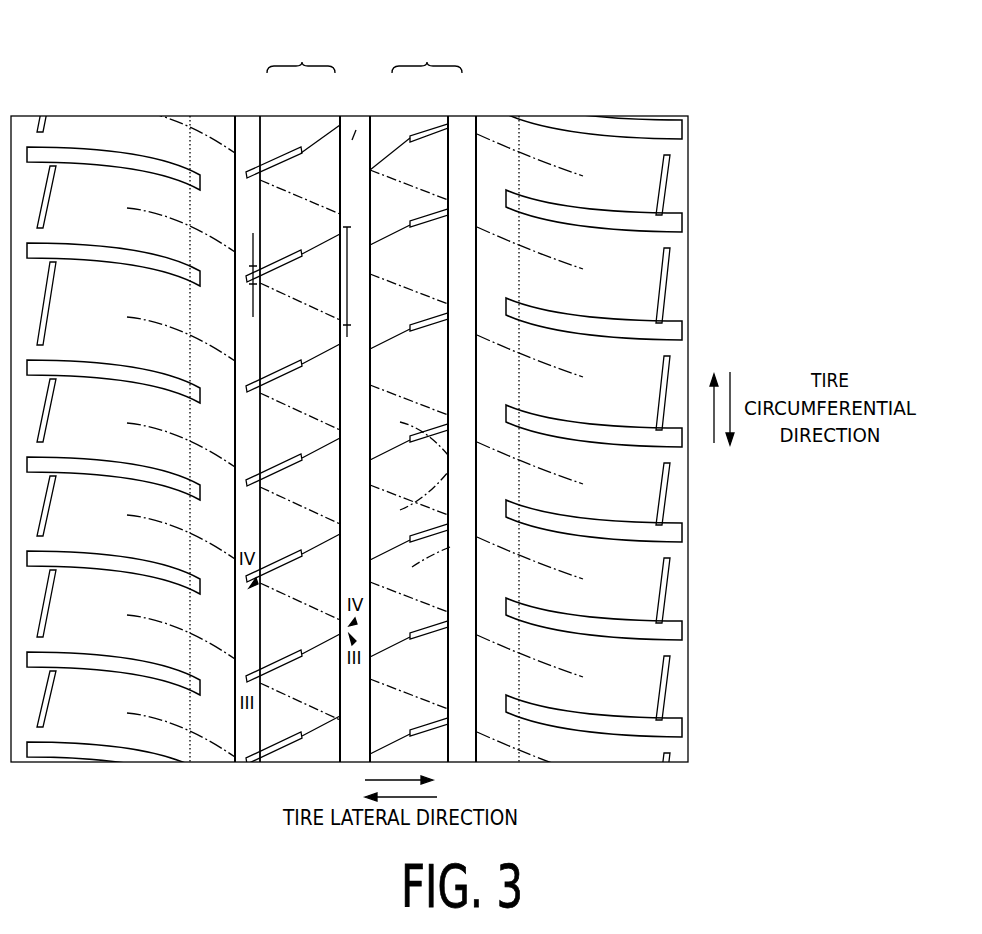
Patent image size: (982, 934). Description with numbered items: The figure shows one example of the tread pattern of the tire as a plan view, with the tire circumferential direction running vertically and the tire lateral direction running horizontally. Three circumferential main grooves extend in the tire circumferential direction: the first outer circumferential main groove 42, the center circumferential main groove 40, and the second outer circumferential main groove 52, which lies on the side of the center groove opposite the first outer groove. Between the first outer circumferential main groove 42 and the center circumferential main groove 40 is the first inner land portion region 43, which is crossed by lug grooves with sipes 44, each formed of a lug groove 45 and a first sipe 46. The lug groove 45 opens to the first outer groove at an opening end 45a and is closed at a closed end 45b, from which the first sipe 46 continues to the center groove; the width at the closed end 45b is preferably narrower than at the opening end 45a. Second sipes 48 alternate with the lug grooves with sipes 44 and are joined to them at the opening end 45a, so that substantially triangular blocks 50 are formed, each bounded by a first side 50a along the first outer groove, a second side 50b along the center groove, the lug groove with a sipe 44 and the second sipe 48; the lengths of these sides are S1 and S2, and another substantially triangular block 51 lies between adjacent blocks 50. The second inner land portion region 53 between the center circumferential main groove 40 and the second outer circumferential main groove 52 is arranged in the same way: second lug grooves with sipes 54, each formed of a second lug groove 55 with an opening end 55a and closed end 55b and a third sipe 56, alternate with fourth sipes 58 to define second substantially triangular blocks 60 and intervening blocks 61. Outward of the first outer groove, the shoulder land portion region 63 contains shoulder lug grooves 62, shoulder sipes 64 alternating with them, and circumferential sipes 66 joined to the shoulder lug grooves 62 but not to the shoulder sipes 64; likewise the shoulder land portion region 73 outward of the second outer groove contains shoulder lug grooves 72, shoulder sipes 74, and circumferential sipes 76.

The center circumferential main groove 40 is at (360, 140).
The first outer circumferential main groove 42 is at (247, 157).
The first inner land portion region 43 is at (270, 127).
The lug groove with a sipe 44 is at (293, 126).
The lug groove 45 is at (275, 160).
The opening end 45a is at (253, 585).
The closed end 45b is at (300, 558).
The first sipe 46 is at (320, 133).
The second sipe 48 is at (340, 112).
The substantially triangular block 50 is at (283, 483).
The first side 50a is at (248, 280).
The second side 50b is at (338, 268).
The other substantially triangular block 51 is at (285, 532).
The second outer circumferential main groove 52 is at (467, 130).
The second inner land portion region 53 is at (380, 167).
The second lug groove with a sipe 54 is at (416, 140).
The second lug groove 55 is at (440, 157).
The opening end 55a is at (448, 316).
The closed end 55b is at (410, 335).
The third sipe 56 is at (405, 137).
The fourth sipe 58 is at (373, 157).
The second substantially triangular block 60 is at (445, 455).
The other substantially triangular block 61 is at (425, 560).
The shoulder lug groove 62 is at (90, 147).
The shoulder land portion region 63 is at (118, 150).
The shoulder sipe 64 is at (147, 210).
The circumferential sipe 66 is at (188, 153).
The shoulder lug groove 72 is at (603, 220).
The shoulder land portion region 73 is at (637, 133).
The shoulder sipe 74 is at (570, 168).
The circumferential sipe 76 is at (520, 120).
The length of the first side S1 is at (248, 262).
The length of the second side S2 is at (347, 337).